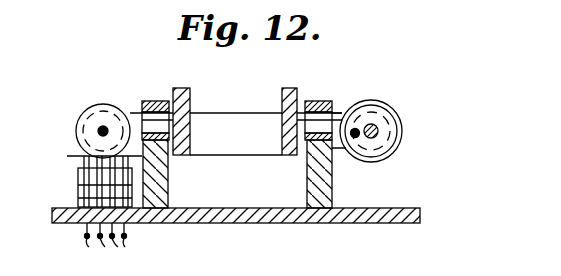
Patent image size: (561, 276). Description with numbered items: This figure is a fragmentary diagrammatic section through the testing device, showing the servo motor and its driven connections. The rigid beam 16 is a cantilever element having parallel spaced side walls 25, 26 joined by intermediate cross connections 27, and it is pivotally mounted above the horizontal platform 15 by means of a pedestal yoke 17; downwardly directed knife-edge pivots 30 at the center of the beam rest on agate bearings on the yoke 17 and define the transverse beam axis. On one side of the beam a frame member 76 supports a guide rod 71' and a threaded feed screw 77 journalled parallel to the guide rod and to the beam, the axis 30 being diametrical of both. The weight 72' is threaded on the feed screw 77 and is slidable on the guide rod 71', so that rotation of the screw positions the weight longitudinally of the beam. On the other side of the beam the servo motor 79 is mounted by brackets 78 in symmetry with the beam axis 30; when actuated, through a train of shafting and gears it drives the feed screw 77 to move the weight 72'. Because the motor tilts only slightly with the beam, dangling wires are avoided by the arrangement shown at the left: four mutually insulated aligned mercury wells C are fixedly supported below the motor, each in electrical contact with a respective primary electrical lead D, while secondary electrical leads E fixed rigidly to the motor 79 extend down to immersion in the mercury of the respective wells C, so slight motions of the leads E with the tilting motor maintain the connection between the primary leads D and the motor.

The horizontal platform 15 is at (190, 224).
The rigid beam 16 is at (249, 101).
The pedestal yoke 17 is at (169, 198).
The side wall 25 is at (183, 88).
The side wall 26 is at (288, 88).
The intermediate cross connection 27 is at (249, 141).
The downwardly directed pivot 30 is at (322, 101).
The guide rod 71' is at (362, 161).
The weight 72' is at (389, 118).
The frame member 76 is at (343, 111).
The threaded feed screw 77 is at (379, 131).
The bracket 78 is at (132, 112).
The servo motor 79 is at (92, 108).
The secondary electrical lead E is at (88, 163).
The mercury well C is at (77, 199).
The primary electrical lead D is at (105, 243).